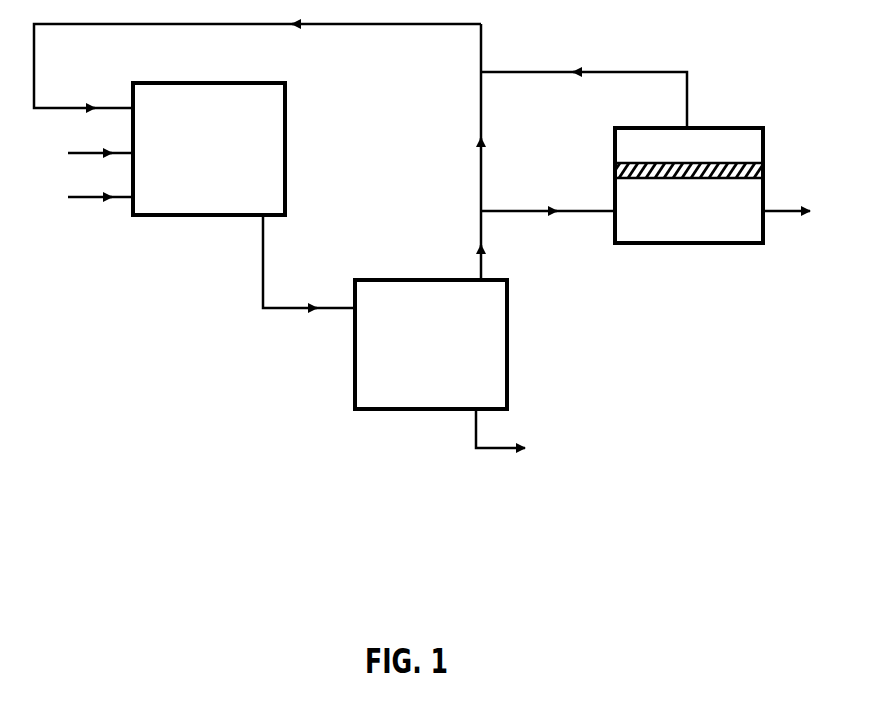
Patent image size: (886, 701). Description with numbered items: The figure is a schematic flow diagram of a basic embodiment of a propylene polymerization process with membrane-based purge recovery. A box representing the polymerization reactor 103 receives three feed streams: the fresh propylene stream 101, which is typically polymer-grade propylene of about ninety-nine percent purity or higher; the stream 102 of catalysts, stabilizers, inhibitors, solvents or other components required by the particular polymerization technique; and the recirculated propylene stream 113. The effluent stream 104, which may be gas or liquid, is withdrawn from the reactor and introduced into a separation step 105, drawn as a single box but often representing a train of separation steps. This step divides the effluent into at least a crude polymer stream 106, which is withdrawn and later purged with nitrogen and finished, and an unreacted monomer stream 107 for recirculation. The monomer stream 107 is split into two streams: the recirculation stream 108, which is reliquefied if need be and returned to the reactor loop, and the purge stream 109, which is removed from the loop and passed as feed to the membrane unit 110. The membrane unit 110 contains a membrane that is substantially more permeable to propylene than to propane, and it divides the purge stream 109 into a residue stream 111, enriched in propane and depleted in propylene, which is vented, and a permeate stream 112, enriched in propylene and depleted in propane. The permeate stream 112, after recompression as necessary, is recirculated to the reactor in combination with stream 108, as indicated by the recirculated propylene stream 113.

The fresh propylene stream 101 is at (75, 153).
The catalyst and additive stream 102 is at (75, 198).
The polymerization reactor 103 is at (175, 215).
The effluent stream 104 is at (309, 284).
The separation step 105 is at (393, 409).
The crude polymer stream 106 is at (524, 438).
The unreacted monomer stream 107 is at (453, 245).
The recirculation stream 108 is at (453, 117).
The purge stream 109 is at (548, 192).
The membrane unit 110 is at (697, 243).
The residue stream 111 is at (810, 212).
The permeate stream 112 is at (584, 80).
The recirculated propylene stream 113 is at (257, 66).